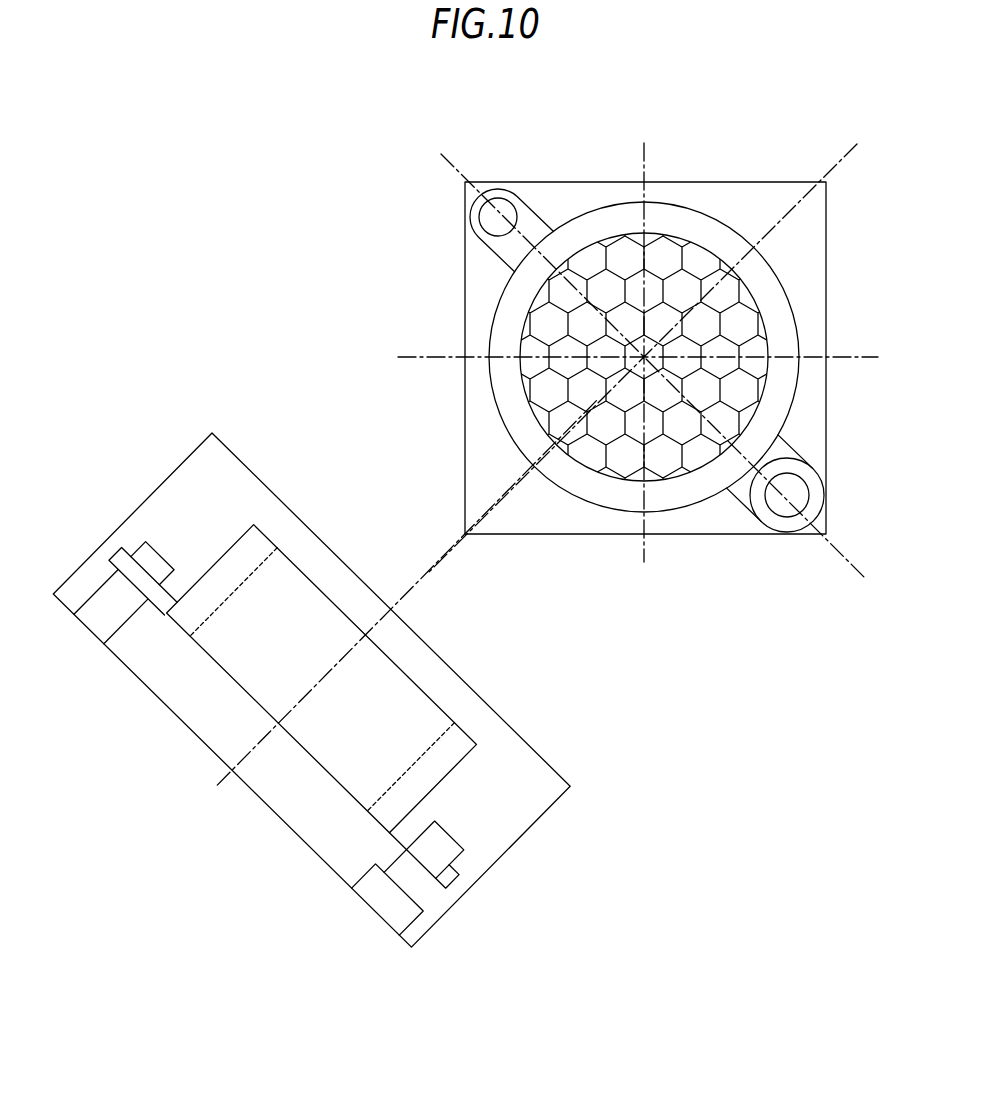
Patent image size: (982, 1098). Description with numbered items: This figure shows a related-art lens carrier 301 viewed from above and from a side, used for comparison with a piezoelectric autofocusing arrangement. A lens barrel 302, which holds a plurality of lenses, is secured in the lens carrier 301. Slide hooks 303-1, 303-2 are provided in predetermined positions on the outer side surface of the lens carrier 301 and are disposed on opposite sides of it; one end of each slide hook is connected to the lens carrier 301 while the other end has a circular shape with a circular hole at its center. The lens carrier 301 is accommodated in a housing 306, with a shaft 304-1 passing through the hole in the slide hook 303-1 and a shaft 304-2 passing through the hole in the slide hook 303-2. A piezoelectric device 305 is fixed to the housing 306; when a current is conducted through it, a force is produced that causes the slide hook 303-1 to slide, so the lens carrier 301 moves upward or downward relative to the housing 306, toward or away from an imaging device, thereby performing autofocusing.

The lens carrier 301 is at (576, 483).
The lens barrel 302 is at (628, 463).
The slide hook 303-1 is at (743, 505).
The slide hook 303-2 is at (488, 256).
The shaft 304-1 is at (787, 503).
The shaft 304-2 is at (497, 208).
The piezoelectric device 305 is at (408, 937).
The housing 306 is at (826, 312).